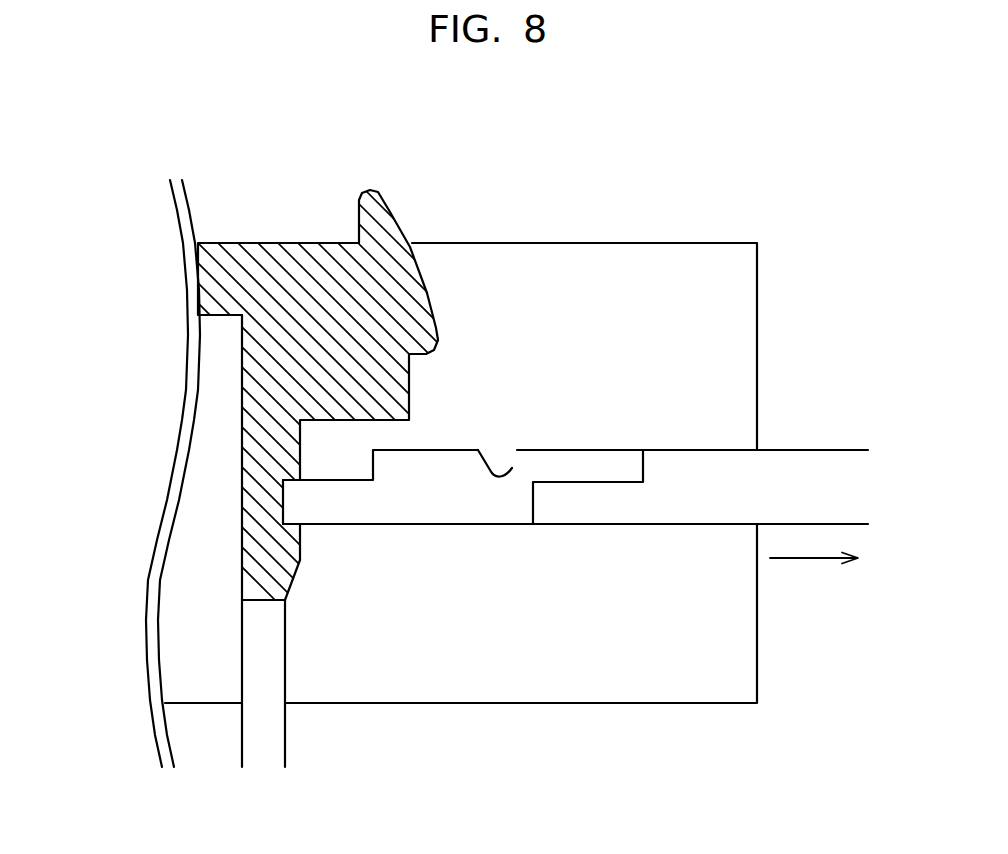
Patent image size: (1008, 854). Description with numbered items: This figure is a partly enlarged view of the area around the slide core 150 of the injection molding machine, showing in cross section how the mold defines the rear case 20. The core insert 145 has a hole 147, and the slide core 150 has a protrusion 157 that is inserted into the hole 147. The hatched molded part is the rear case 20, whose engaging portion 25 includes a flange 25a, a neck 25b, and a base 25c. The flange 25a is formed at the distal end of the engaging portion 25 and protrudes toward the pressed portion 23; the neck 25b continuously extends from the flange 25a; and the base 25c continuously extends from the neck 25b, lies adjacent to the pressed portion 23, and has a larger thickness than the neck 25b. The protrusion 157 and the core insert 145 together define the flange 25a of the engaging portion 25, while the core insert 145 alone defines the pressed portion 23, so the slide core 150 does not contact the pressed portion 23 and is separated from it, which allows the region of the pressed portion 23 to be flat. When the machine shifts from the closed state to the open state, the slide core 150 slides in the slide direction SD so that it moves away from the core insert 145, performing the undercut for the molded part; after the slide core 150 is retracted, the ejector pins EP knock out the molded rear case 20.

The rear case 20 is at (401, 216).
The pressed portion 23 is at (340, 432).
The engaging portion 25 is at (240, 516).
The flange 25a is at (270, 577).
The neck 25b is at (267, 500).
The base 25c is at (278, 437).
The core insert 145 is at (630, 243).
The hole 147 is at (512, 468).
The slide core 150 is at (813, 449).
The protrusion 157 is at (693, 500).
The ejector pins EP is at (262, 745).
The slide direction SD is at (800, 558).